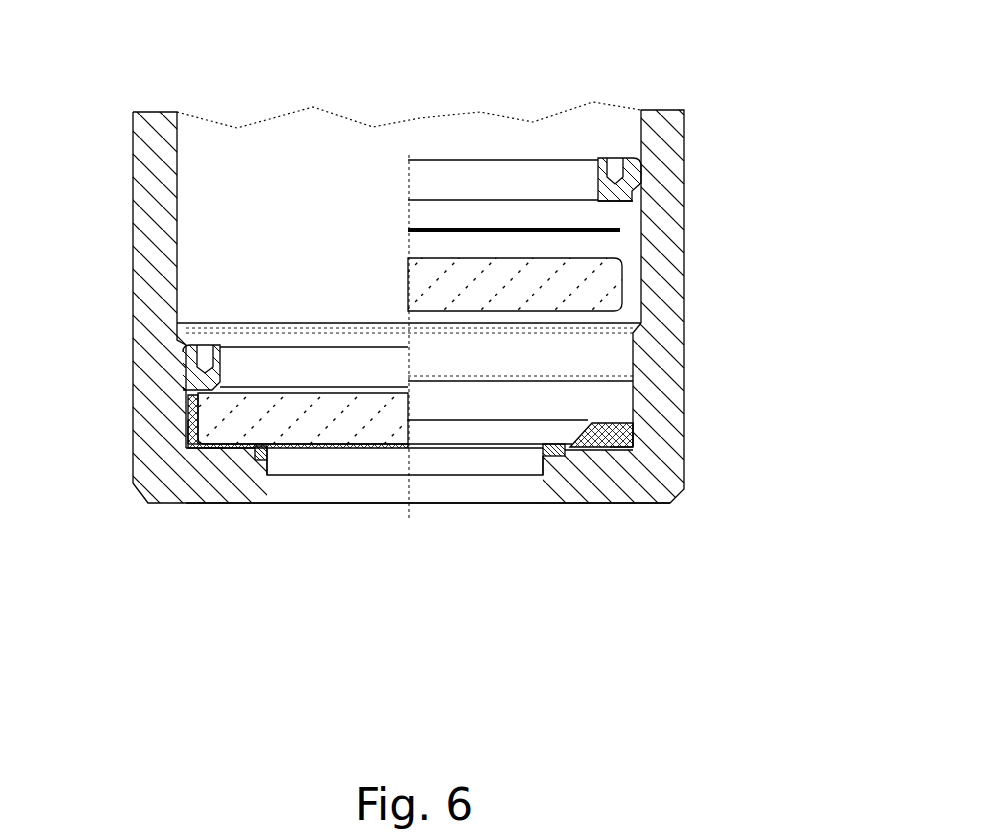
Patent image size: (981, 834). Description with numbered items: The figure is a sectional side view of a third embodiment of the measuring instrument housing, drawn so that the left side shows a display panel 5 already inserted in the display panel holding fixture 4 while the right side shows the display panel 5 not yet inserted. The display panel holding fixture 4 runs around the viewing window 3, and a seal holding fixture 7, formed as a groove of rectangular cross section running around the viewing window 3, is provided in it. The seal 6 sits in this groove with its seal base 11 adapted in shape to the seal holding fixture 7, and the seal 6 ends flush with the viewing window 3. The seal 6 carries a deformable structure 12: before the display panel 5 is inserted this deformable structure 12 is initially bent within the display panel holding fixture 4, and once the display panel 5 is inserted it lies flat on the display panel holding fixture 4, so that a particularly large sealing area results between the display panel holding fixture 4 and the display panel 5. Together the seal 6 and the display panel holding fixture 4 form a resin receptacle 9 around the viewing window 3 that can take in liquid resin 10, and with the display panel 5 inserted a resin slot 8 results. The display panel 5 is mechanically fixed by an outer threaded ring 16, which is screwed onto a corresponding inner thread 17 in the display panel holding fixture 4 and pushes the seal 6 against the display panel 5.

The viewing window 3 is at (395, 506).
The display panel holding fixture 4 is at (697, 93).
The display panel 5 is at (187, 402).
The seal 6 is at (217, 450).
The seal holding fixture 7 is at (258, 455).
The resin slot 8 is at (187, 438).
The resin receptacle 9 is at (623, 442).
The liquid resin 10 is at (187, 425).
The seal base 11 is at (268, 458).
The deformable structure 12 is at (230, 452).
The outer threaded ring 16 is at (197, 378).
The inner thread 17 is at (183, 342).